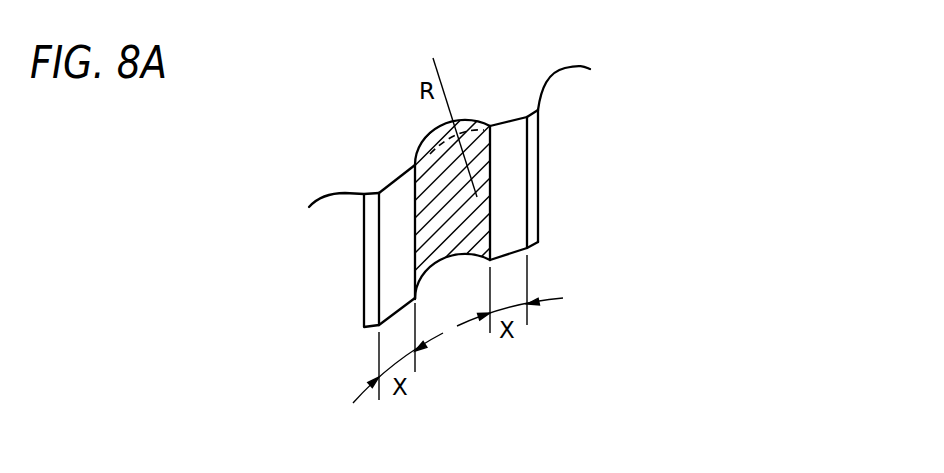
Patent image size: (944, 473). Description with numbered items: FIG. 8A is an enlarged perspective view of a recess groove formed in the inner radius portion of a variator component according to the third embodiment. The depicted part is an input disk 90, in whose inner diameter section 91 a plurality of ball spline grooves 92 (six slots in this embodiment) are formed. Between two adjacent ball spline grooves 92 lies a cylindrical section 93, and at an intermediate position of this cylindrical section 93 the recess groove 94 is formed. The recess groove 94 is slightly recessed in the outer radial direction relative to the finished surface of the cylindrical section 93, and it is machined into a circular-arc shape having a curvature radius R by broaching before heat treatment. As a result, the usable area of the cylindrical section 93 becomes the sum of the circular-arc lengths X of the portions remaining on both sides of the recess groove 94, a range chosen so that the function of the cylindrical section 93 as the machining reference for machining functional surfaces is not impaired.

The input disk 90 is at (296, 69).
The inner diameter section 91 is at (420, 141).
The ball spline grooves 92 is at (318, 198).
The cylindrical section 93 is at (414, 167).
The recess groove 94 is at (479, 119).